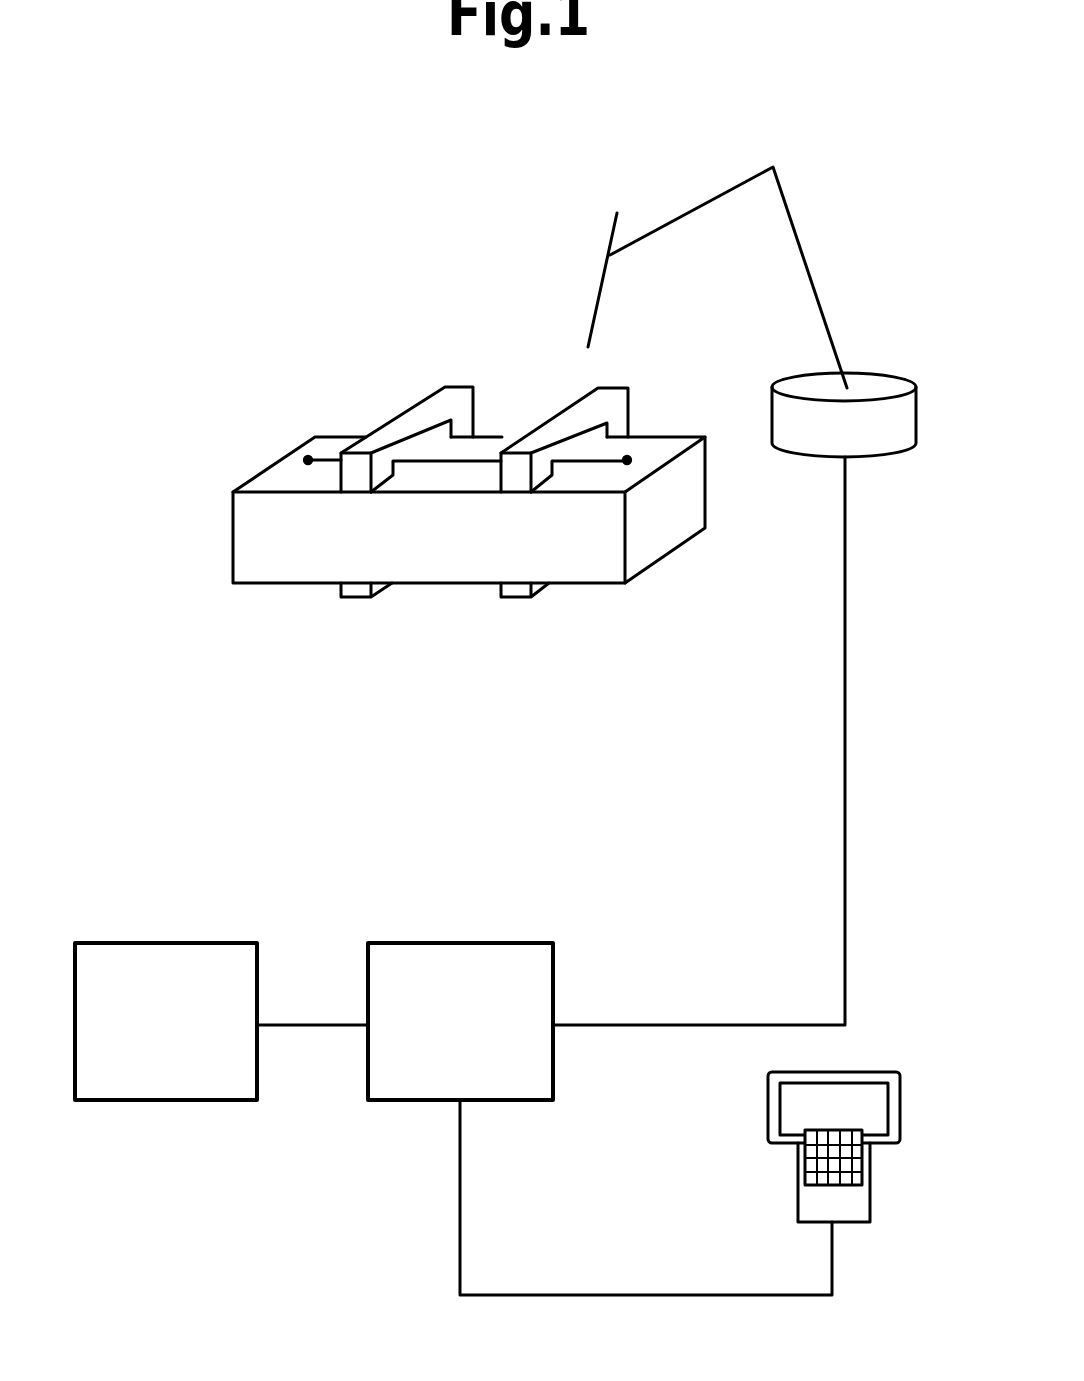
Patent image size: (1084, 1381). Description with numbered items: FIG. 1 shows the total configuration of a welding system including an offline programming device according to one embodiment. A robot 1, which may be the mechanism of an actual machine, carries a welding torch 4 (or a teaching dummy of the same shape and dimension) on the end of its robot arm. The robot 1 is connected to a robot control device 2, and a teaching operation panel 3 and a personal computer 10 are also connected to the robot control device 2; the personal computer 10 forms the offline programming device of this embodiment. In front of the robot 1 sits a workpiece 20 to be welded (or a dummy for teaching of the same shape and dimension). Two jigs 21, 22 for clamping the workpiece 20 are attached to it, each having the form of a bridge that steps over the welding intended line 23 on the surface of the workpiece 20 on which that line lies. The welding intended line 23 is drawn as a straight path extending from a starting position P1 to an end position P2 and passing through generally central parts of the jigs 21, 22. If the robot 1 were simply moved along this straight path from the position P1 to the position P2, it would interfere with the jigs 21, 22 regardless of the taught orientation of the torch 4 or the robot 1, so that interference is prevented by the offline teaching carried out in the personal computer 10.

The robot 1 is at (873, 231).
The robot control device 2 is at (503, 919).
The teaching operation panel 3 is at (866, 1257).
The welding torch 4 is at (612, 235).
The personal computer 10 is at (200, 919).
The workpiece 20 is at (333, 446).
The jig 21 is at (413, 413).
The jig 22 is at (560, 416).
The welding intended line 23 is at (454, 470).
The starting position P1 is at (300, 456).
The end position P2 is at (632, 458).